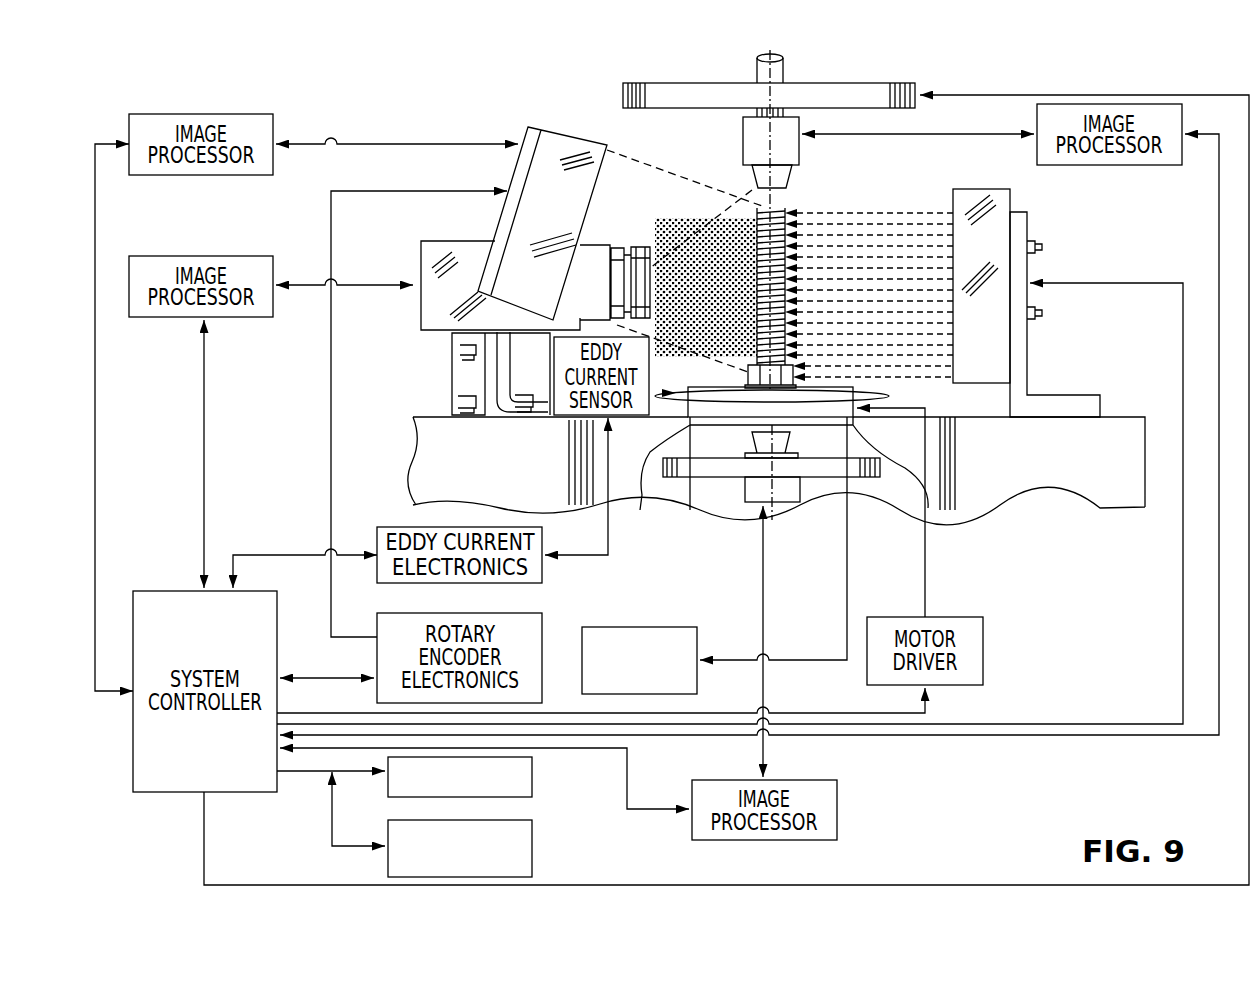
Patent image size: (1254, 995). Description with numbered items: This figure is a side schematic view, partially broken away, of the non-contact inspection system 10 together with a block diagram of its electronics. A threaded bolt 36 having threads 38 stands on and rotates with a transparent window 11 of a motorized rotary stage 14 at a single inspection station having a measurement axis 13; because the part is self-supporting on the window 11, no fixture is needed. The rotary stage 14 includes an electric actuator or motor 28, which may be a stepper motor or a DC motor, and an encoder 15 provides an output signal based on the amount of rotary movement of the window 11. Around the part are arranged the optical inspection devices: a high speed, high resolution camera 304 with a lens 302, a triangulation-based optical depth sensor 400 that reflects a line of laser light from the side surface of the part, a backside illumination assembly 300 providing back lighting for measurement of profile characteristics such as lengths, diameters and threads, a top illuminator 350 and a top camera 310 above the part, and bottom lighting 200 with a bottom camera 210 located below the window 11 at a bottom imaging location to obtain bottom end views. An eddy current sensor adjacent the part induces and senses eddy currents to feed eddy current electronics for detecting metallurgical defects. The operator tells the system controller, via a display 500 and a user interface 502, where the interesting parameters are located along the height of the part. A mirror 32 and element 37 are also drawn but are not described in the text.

The system 10 is at (962, 66).
The transparent window 11 is at (813, 382).
The measurement axis 13 is at (782, 528).
The rotary stage 14 is at (843, 388).
The encoder 15 is at (699, 640).
The motor 28 is at (722, 407).
The mirror 32 is at (916, 183).
The threaded bolt 36 is at (796, 236).
The fastener head 37 is at (745, 378).
The threads 38 is at (752, 284).
The bottom lighting 200 is at (882, 470).
The bottom camera 210 is at (802, 488).
The backside illumination assembly 300 is at (1018, 190).
The lens 302 is at (597, 242).
The camera 304 is at (414, 320).
The top camera 310 is at (742, 155).
The top illuminator 350 is at (828, 78).
The optical depth sensor 400 is at (568, 124).
The display 500 is at (532, 778).
The user interface 502 is at (532, 856).